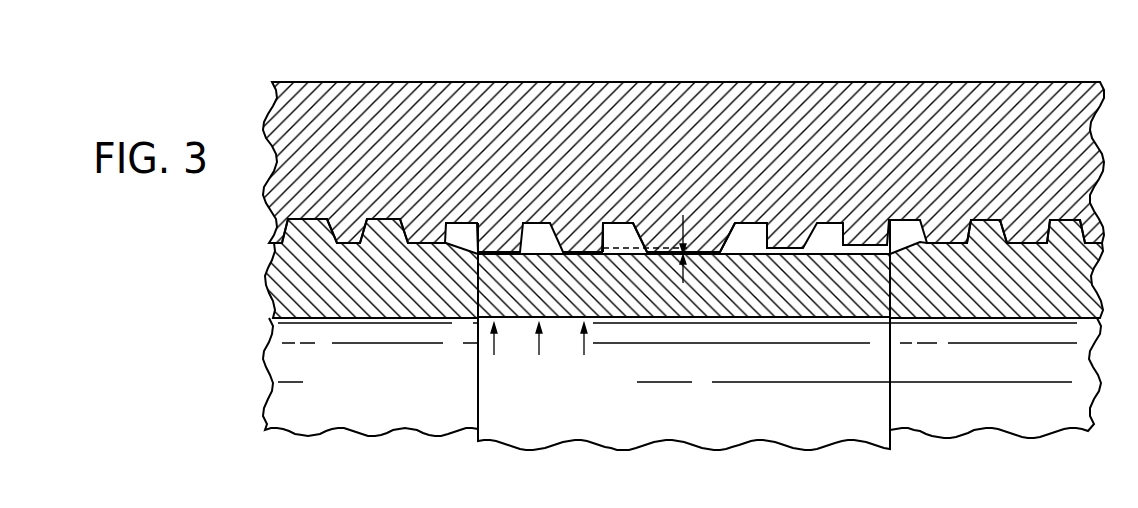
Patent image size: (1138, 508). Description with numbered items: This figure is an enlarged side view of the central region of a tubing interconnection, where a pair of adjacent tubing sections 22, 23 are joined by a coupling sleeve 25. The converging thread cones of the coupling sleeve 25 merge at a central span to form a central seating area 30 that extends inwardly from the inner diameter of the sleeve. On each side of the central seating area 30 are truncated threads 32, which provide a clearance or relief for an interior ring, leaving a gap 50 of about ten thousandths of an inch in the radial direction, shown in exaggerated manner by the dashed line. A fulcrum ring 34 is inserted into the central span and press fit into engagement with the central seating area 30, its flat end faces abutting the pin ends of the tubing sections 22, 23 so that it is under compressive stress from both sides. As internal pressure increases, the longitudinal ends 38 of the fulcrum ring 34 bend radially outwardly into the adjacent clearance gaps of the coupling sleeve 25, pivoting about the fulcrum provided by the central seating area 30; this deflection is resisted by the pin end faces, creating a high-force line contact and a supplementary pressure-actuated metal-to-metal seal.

The tubing section 22 is at (435, 420).
The tubing section 23 is at (960, 410).
The coupling sleeve 25 is at (906, 81).
The central seating area 30 is at (707, 246).
The truncated threads 32 is at (583, 248).
The fulcrum ring 34 is at (670, 317).
The longitudinal ends of the fulcrum ring 38 is at (539, 357).
The gap 50 is at (697, 250).